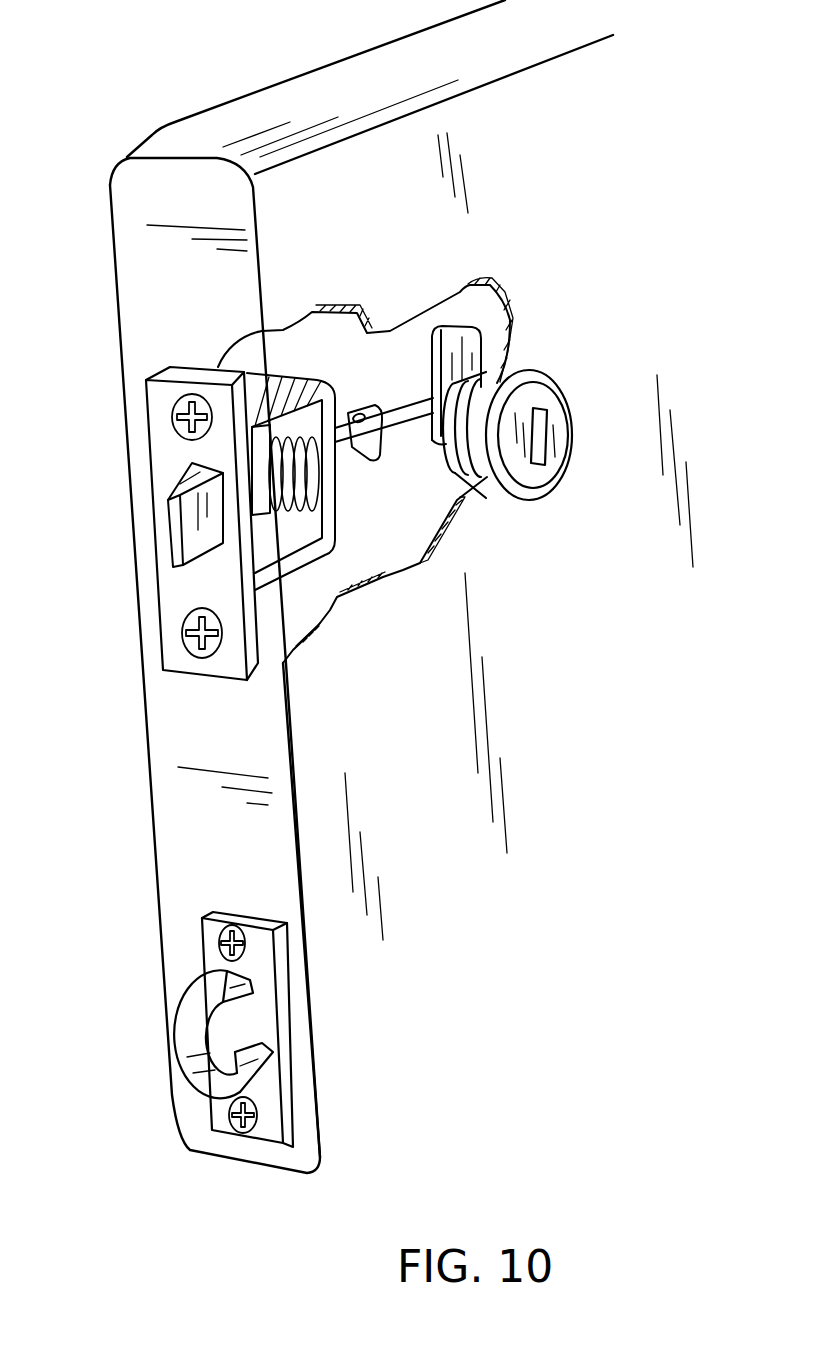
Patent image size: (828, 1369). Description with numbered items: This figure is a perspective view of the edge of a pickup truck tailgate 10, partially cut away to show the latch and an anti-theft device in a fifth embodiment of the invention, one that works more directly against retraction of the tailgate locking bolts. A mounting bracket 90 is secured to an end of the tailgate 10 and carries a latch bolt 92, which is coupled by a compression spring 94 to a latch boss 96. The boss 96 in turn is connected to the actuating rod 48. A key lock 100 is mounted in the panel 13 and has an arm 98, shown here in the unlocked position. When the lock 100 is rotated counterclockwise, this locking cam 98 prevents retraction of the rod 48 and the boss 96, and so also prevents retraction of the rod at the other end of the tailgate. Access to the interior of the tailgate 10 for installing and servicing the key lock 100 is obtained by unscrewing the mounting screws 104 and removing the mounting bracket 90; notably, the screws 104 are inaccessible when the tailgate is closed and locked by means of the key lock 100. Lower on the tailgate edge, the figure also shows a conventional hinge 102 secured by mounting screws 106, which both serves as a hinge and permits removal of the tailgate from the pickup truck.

The tailgate 10 is at (345, 158).
The panel 13 is at (400, 739).
The actuating rod 48 is at (400, 410).
The mounting bracket 90 is at (165, 452).
The latch bolt 92 is at (188, 524).
The compression spring 94 is at (273, 511).
The latch boss 96 is at (360, 462).
The arm 98 is at (459, 326).
The key lock 100 is at (552, 415).
The hinge 102 is at (262, 1007).
The mounting screws 104 is at (197, 647).
The mounting screws 106 is at (217, 942).